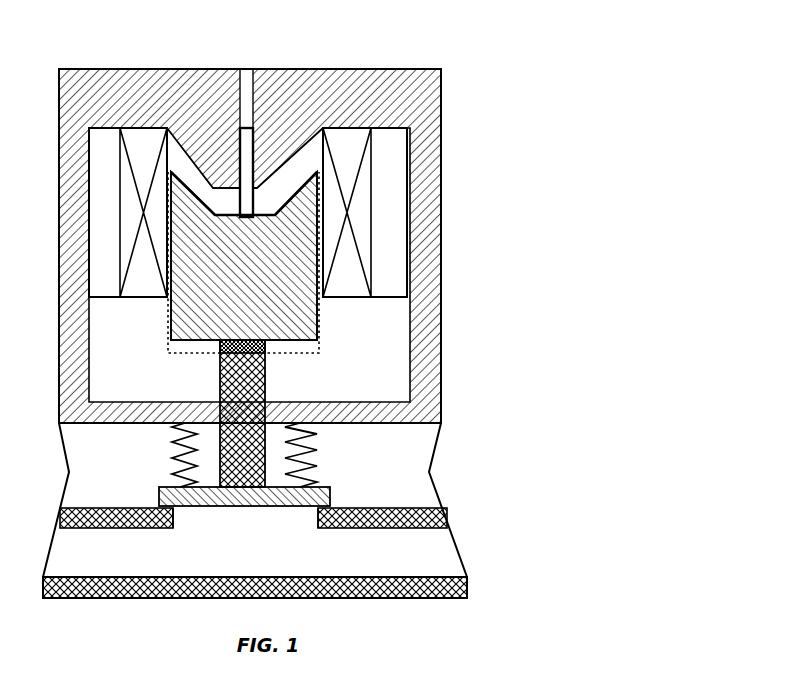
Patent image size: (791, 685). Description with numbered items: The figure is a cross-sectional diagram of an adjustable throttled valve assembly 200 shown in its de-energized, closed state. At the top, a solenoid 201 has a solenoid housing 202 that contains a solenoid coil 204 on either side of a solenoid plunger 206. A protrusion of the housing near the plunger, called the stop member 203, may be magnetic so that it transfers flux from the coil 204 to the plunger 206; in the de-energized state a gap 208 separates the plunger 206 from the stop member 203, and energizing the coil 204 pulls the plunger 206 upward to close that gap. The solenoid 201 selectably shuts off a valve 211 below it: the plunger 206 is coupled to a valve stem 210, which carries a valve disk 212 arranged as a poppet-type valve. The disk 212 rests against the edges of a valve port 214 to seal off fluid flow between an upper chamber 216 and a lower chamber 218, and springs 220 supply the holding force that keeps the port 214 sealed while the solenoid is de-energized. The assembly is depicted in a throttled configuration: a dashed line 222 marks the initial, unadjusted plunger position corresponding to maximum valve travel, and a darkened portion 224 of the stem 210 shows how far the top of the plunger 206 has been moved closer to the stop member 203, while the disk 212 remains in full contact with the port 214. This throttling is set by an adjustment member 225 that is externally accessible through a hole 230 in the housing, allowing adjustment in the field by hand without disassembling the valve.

The adjustable throttled valve assembly 200 is at (528, 44).
The solenoid 201 is at (486, 237).
The solenoid housing 202 is at (368, 105).
The stop member 203 is at (267, 138).
The solenoid coil 204 is at (152, 298).
The solenoid plunger 206 is at (222, 300).
The gap 208 is at (251, 210).
The valve stem 210 is at (220, 380).
The valve 211 is at (489, 464).
The valve disk 212 is at (331, 496).
The valve port 214 is at (224, 533).
The chamber 216 is at (89, 493).
The chamber 218 is at (87, 560).
The springs 220 is at (172, 455).
The dashed line 222 is at (320, 350).
The darkened portion 224 is at (266, 352).
The member 225 is at (253, 69).
The hole 230 is at (241, 69).